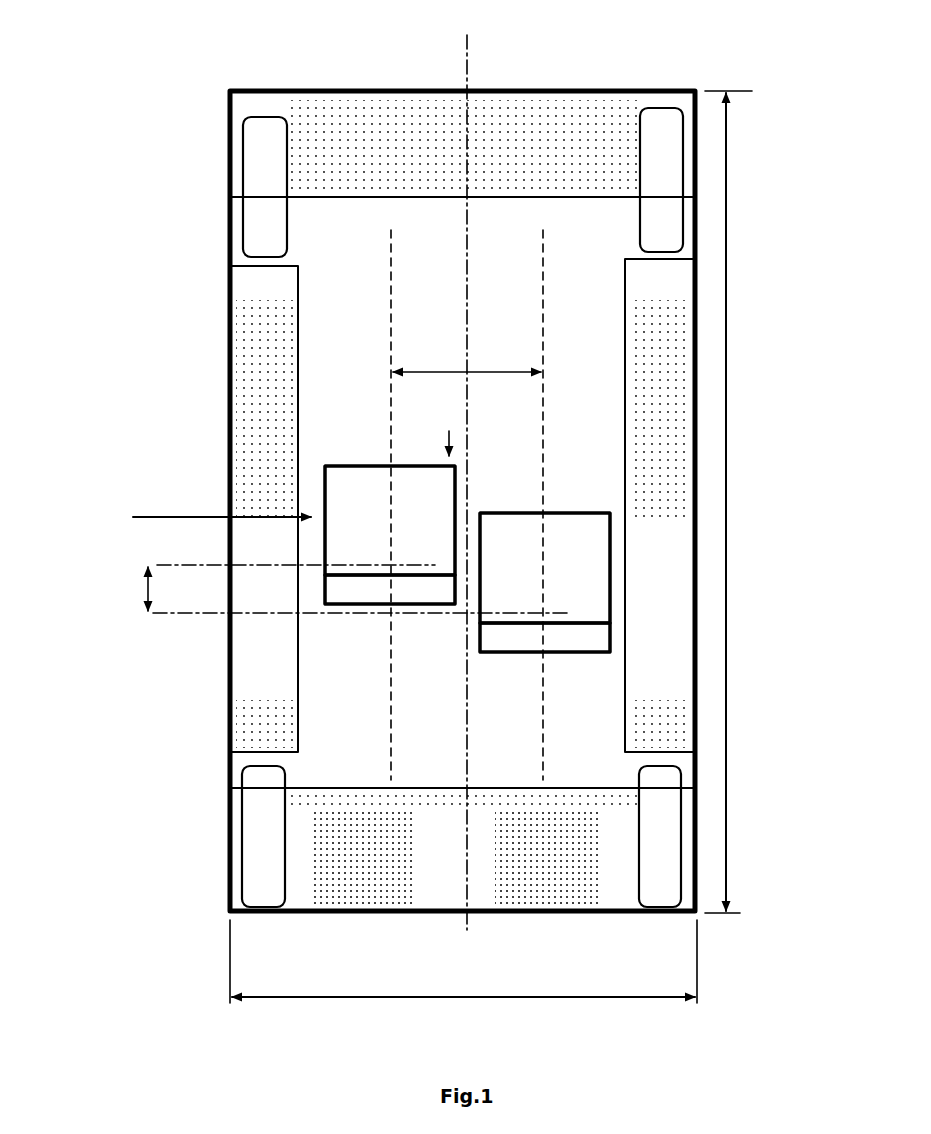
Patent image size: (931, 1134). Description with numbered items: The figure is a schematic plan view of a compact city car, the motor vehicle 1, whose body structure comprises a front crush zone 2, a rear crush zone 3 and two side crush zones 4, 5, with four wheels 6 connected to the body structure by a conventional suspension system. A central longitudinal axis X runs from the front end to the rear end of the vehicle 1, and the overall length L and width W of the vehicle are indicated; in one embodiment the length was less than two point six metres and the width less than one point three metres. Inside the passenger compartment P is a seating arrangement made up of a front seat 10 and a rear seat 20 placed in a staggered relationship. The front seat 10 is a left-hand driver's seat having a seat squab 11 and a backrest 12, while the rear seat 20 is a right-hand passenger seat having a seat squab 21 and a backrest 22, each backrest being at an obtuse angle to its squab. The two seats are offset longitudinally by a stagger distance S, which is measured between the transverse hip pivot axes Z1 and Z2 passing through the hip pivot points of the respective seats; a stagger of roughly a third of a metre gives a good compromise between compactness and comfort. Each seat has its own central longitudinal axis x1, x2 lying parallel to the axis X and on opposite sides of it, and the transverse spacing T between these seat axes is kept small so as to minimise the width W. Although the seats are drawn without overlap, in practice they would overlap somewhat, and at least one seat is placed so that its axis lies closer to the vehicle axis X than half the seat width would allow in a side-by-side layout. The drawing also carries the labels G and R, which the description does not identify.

The motor vehicle 1 is at (222, 141).
The front crush zone 2 is at (371, 197).
The rear crush zone 3 is at (411, 788).
The side crush zone 4 is at (298, 378).
The side crush zone 5 is at (625, 382).
The wheel 6 is at (243, 168).
The front seat 10 is at (320, 478).
The seat squab 11 is at (360, 466).
The backrest 12 is at (378, 604).
The rear seat 20 is at (574, 508).
The seat squab 21 is at (512, 513).
The backrest 22 is at (553, 652).
The central longitudinal axis X is at (467, 485).
The central longitudinal axis of front seat x1 is at (390, 318).
The central longitudinal axis of rear seat x2 is at (544, 282).
The transverse hip pivot axis Z1 is at (158, 565).
The transverse hip pivot axis Z2 is at (155, 615).
The transverse spacing T is at (466, 372).
The center of gravity G is at (449, 432).
The direction of travel R is at (203, 520).
The longitudinal stagger distance S is at (146, 590).
The passenger compartment P is at (457, 696).
The length L is at (728, 502).
The width W is at (463, 975).